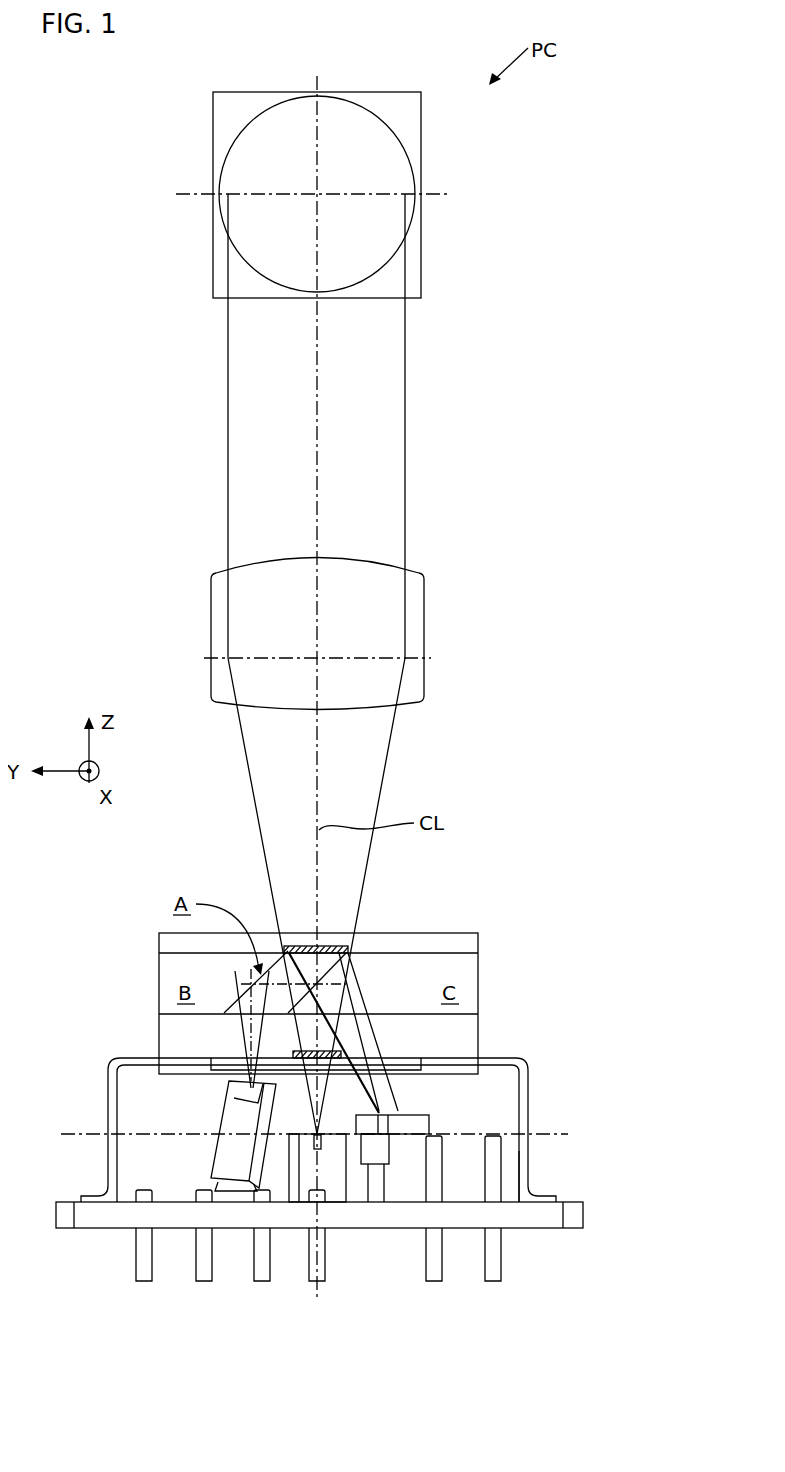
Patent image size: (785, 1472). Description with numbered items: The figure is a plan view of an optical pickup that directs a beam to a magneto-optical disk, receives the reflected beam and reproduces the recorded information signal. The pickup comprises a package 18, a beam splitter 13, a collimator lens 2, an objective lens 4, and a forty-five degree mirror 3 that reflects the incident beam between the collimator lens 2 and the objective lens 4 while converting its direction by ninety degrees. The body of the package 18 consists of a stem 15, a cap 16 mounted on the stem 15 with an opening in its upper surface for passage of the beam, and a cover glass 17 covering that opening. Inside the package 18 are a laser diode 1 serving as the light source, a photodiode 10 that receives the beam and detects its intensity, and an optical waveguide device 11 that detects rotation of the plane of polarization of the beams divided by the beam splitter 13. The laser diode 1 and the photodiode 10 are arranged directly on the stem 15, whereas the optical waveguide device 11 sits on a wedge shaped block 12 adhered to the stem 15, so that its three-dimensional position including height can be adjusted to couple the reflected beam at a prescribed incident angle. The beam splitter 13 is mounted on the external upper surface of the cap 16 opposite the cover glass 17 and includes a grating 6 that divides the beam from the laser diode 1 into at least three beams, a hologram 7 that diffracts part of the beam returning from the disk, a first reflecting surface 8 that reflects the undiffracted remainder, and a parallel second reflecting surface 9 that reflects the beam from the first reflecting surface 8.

The laser diode 1 is at (313, 1150).
The collimator lens 2 is at (423, 620).
The 45° mirror 3 is at (420, 238).
The objective lens 4 is at (405, 150).
The grating 6 is at (292, 1050).
The hologram 7 is at (303, 940).
The first reflecting surface 8 is at (340, 972).
The second reflecting surface 9 is at (242, 988).
The photodiode 10 is at (433, 1115).
The optical waveguide device 11 is at (222, 1112).
The wedge shaped block 12 is at (284, 1186).
The beam splitter 13 is at (484, 975).
The stem 15 is at (584, 1208).
The cap 16 is at (547, 1193).
The cover glass 17 is at (500, 1082).
The package 18 is at (553, 1240).